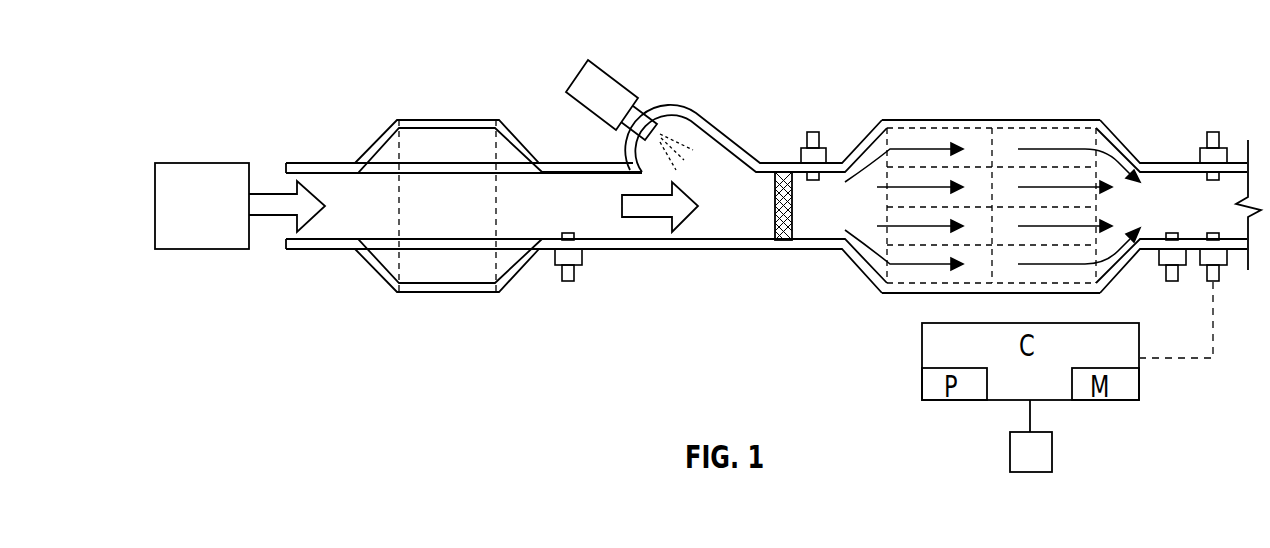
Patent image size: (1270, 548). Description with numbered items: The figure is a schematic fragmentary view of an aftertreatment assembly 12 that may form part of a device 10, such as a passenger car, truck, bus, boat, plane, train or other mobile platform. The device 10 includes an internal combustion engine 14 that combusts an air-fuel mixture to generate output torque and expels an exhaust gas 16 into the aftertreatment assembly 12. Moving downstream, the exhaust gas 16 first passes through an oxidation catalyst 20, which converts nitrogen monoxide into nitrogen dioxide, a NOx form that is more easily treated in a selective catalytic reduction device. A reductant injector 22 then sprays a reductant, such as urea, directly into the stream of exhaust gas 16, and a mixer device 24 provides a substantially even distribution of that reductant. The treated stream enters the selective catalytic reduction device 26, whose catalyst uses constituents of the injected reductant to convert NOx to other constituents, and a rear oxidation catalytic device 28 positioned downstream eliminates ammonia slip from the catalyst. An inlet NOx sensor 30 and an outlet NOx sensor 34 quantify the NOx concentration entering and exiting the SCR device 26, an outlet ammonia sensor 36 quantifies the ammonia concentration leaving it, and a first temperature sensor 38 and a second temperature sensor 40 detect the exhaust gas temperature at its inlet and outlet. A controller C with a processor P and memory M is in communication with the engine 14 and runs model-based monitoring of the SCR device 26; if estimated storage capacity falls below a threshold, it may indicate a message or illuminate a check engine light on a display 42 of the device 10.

The device 10 is at (272, 56).
The aftertreatment assembly 12 is at (568, 50).
The internal combustion engine 14 is at (201, 162).
The exhaust gas 16 is at (275, 217).
The oxidation catalyst 20 is at (448, 120).
The reductant injector 22 is at (617, 73).
The mixer device 24 is at (781, 171).
The selective catalytic reduction (SCR) device 26 is at (940, 120).
The rear oxidation catalytic device 28 is at (1043, 120).
The inlet NOx sensor 30 is at (816, 131).
The outlet NOx sensor 34 is at (1213, 131).
The outlet ammonia sensor 36 is at (1213, 282).
The first temperature sensor 38 is at (568, 282).
The second temperature sensor 40 is at (1172, 282).
The display 42 is at (1052, 452).